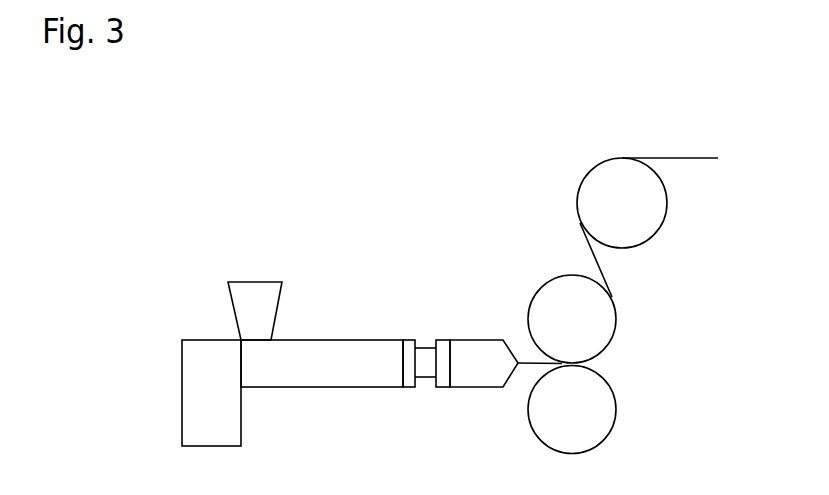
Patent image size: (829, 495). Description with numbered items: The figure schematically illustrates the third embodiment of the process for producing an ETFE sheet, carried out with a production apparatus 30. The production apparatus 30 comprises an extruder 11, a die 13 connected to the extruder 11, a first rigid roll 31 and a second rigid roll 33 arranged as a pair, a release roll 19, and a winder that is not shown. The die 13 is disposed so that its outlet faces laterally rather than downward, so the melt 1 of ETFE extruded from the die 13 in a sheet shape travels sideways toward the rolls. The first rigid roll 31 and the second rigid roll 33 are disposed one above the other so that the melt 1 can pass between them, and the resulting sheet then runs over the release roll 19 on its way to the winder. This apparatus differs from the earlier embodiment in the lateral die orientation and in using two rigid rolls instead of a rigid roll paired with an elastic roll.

The production apparatus 30 is at (329, 153).
The extruder 11 is at (342, 339).
The die 13 is at (472, 339).
The melt 1 is at (528, 368).
The release roll 19 is at (650, 202).
The first rigid roll 31 is at (600, 327).
The second rigid roll 33 is at (600, 414).